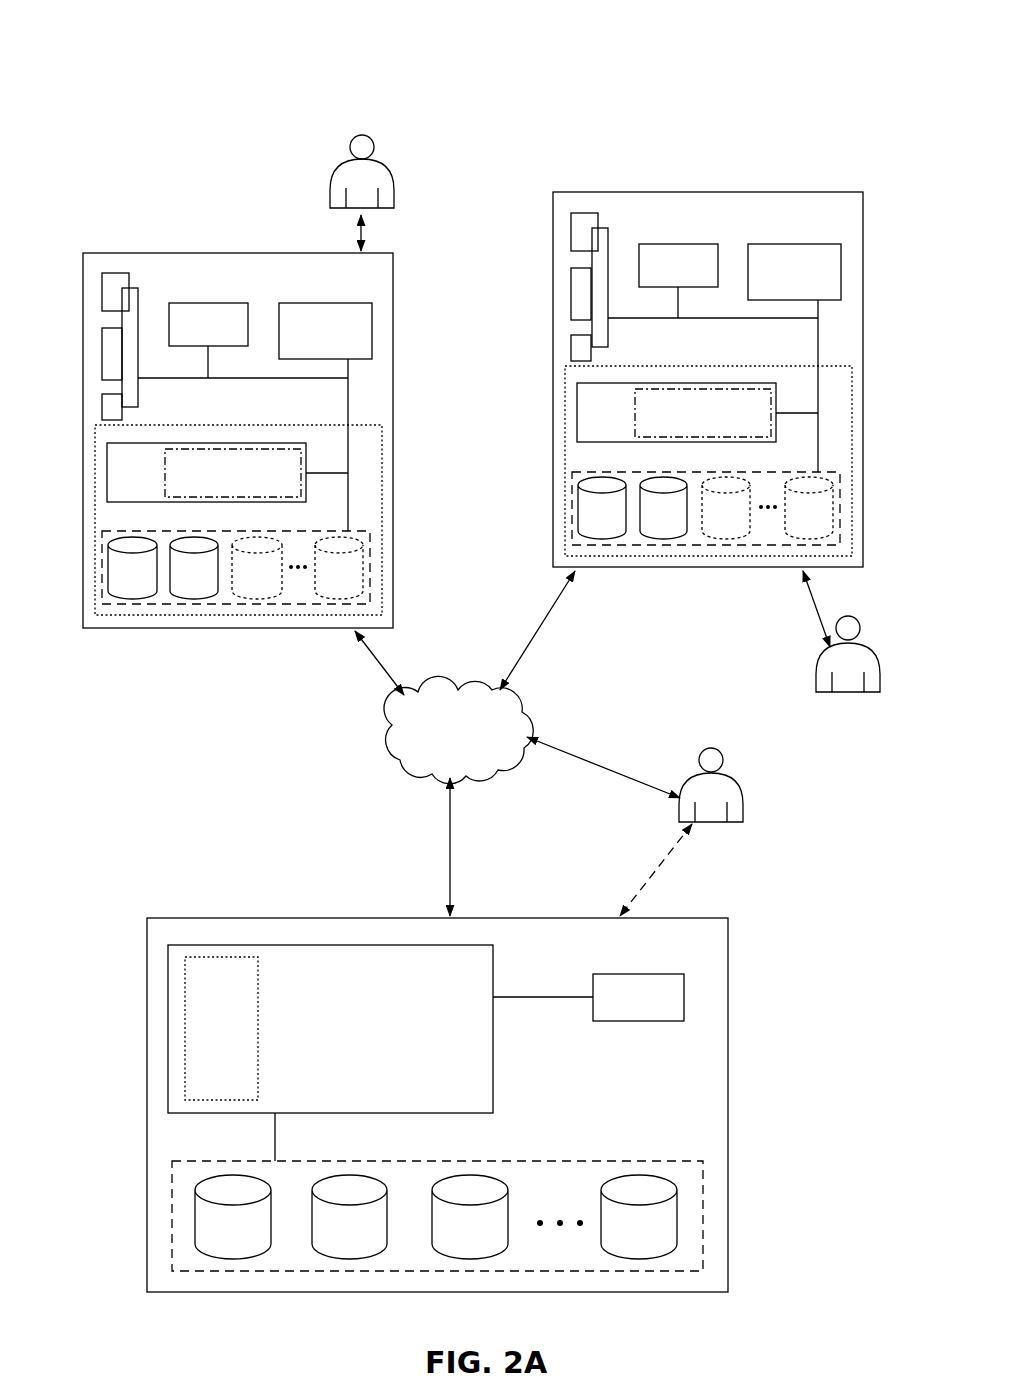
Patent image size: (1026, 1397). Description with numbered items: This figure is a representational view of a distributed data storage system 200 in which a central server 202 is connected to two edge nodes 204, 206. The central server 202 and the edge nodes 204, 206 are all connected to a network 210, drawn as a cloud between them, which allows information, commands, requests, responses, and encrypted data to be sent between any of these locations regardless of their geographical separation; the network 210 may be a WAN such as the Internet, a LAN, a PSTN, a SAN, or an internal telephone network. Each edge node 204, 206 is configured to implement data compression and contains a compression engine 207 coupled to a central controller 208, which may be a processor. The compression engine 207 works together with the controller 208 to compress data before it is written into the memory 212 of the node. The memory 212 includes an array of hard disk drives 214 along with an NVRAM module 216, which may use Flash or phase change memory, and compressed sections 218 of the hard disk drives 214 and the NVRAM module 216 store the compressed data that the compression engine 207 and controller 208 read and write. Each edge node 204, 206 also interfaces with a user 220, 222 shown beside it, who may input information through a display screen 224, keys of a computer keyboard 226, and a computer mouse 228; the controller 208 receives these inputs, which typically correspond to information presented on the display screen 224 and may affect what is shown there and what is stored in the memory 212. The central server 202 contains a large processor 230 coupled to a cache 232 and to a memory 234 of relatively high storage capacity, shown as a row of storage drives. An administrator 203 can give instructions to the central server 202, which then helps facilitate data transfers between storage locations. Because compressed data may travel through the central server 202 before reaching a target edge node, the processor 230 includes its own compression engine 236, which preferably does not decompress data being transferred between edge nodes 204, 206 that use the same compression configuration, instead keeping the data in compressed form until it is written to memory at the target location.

The distributed data storage system 200 is at (92, 28).
The central server 202 is at (167, 918).
The administrator 203 is at (756, 777).
The edge node 204 is at (125, 253).
The edge node 206 is at (776, 192).
The compression engine 207 is at (443, 311).
The central controller 208 is at (560, 387).
The network 210 is at (458, 729).
The memory 212 is at (96, 531).
The array of hard disk drives 214 is at (102, 573).
The NVRAM module 216 is at (107, 471).
The compressed sections 218 is at (290, 449).
The user 220 is at (880, 641).
The user 222 is at (394, 158).
The display screen 224 is at (102, 405).
The computer keyboard 226 is at (102, 346).
The computer mouse 228 is at (102, 291).
The processor 230 is at (168, 995).
The cache 232 is at (638, 997).
The memory 234 is at (202, 1271).
The compression engine 236 is at (185, 1024).